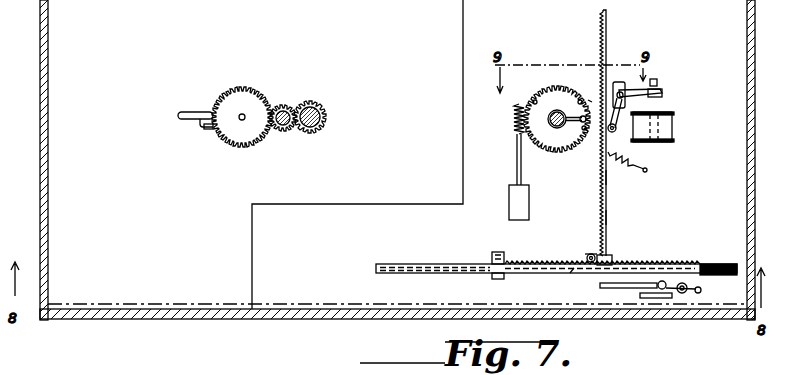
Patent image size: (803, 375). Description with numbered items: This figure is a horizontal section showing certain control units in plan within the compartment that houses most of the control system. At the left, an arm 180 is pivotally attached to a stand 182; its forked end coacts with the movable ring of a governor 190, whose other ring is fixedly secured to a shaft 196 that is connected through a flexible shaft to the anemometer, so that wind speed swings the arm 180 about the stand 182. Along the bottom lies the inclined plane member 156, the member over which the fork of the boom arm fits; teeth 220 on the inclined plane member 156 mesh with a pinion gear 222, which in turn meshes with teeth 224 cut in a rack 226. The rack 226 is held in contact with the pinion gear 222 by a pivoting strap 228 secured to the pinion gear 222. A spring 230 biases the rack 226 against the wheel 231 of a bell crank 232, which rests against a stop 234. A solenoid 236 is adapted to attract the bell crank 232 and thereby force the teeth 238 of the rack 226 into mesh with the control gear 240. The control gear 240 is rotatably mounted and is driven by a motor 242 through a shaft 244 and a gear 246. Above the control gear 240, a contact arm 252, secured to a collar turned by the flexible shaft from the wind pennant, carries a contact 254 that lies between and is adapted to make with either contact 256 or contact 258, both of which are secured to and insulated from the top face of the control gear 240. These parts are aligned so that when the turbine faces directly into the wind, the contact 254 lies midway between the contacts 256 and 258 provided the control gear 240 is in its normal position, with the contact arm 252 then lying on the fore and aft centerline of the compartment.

The inclined plane member 156 is at (571, 274).
The arm 180 is at (633, 280).
The stand 182 is at (640, 296).
The governor 190 is at (699, 302).
The shaft 196 is at (701, 289).
The teeth 220 is at (663, 266).
The pinion gear 222 is at (608, 259).
The teeth 224 is at (607, 216).
The rack 226 is at (608, 176).
The pivoting strap 228 is at (596, 257).
The spring 230 is at (647, 170).
The wheel 231 is at (621, 127).
The bell crank 232 is at (658, 92).
The stop 234 is at (657, 80).
The solenoid 236 is at (672, 126).
The teeth 238 is at (598, 46).
The control gear 240 is at (550, 85).
The motor 242 is at (504, 202).
The shaft 244 is at (516, 160).
The gear 246 is at (514, 122).
The contact arm 252 is at (548, 111).
The contact 254 is at (575, 128).
The contact 256 is at (589, 101).
The contact 258 is at (587, 131).